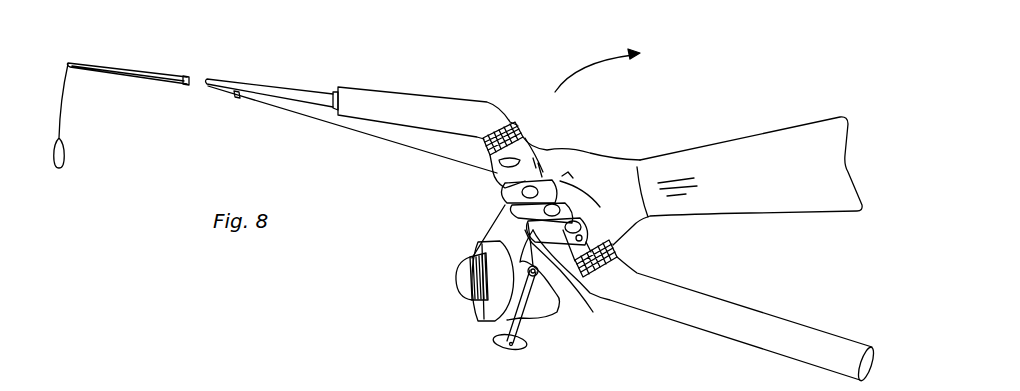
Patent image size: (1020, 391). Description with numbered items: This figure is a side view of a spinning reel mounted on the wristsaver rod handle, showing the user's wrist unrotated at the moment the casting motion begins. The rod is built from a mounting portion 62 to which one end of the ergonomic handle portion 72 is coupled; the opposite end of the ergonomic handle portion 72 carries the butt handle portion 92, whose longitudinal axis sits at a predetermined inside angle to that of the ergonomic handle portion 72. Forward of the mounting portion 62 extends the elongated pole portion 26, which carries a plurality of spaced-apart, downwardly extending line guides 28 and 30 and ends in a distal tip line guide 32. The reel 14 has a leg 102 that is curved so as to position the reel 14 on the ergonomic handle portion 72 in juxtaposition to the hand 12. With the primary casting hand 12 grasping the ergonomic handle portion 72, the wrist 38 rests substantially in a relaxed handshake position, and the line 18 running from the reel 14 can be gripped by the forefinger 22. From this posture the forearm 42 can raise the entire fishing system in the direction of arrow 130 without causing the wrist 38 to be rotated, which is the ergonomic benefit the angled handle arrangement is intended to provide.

The hand 12 is at (570, 170).
The reel 14 is at (449, 282).
The line 18 is at (378, 137).
The forefinger 22 is at (498, 187).
The elongated pole portion 26 is at (213, 78).
The line guide 28 is at (237, 97).
The line guide 30 is at (173, 82).
The distal tip line guide 32 is at (68, 66).
The wrist 38 is at (627, 158).
The forearm 42 is at (782, 207).
The mounting portion 62 is at (391, 93).
The ergonomic handle portion 72 is at (503, 121).
The butt handle portion 92 is at (702, 322).
The leg 102 is at (572, 286).
The arrow 130 is at (583, 73).